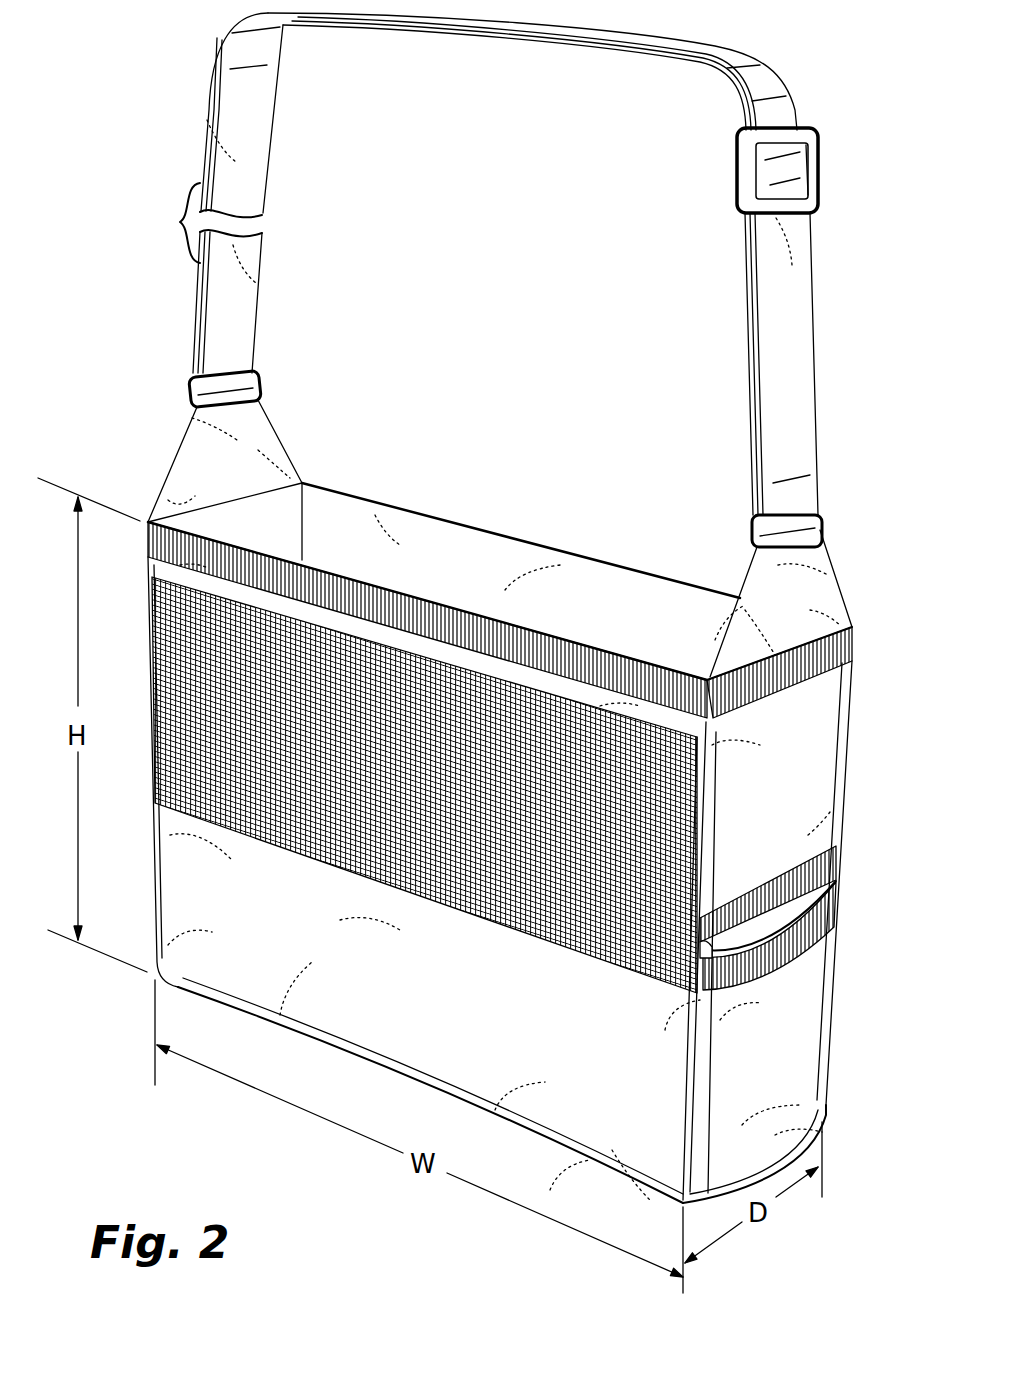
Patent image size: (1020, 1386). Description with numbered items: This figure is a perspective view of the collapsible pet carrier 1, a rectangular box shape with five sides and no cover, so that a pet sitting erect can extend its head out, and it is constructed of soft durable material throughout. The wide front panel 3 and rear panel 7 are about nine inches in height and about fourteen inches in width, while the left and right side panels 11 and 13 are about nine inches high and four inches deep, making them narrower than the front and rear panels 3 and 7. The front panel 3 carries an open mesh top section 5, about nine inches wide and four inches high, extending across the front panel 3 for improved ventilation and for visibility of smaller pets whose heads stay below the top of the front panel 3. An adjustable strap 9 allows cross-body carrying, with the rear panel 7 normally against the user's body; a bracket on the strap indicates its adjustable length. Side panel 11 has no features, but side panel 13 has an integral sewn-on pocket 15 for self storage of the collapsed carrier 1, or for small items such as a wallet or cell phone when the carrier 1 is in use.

The pet carrier 1 is at (103, 405).
The front panel 3 is at (220, 977).
The open mesh top section 5 is at (157, 666).
The rear panel 7 is at (588, 578).
The adjustable strap 9 is at (258, 136).
The side panel 11 is at (270, 518).
The side panel 13 is at (823, 815).
The pocket 15 is at (812, 1033).